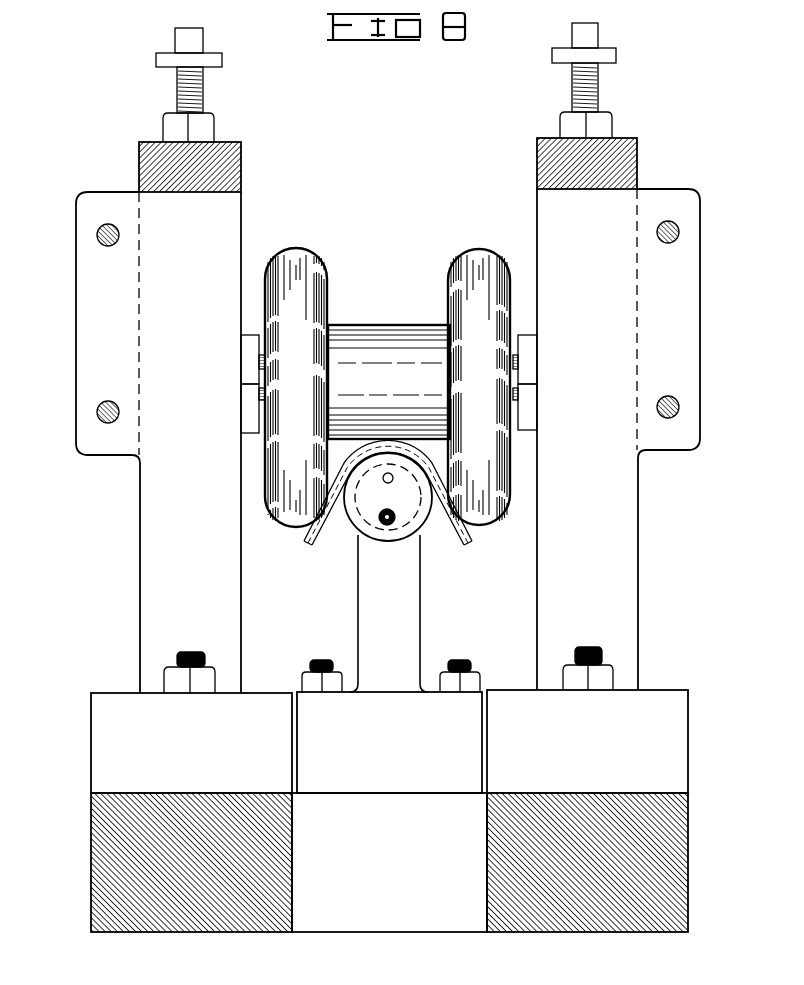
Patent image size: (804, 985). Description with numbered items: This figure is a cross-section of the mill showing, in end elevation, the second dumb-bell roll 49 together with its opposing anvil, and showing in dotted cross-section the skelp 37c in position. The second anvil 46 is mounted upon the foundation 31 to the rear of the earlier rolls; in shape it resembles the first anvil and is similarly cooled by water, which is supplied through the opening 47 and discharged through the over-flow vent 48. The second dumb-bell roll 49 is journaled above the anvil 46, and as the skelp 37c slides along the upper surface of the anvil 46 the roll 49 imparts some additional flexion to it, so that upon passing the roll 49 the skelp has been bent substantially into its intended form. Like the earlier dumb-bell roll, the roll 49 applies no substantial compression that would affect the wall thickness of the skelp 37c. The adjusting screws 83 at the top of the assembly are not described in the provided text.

The adjusting screw 83 is at (177, 88).
The second dumb-bell roll 49 is at (373, 345).
The skelp 37c is at (306, 538).
The over-flow vent 48 is at (390, 482).
The opening 47 is at (382, 521).
The second anvil 46 is at (410, 597).
The foundation 31 is at (100, 851).